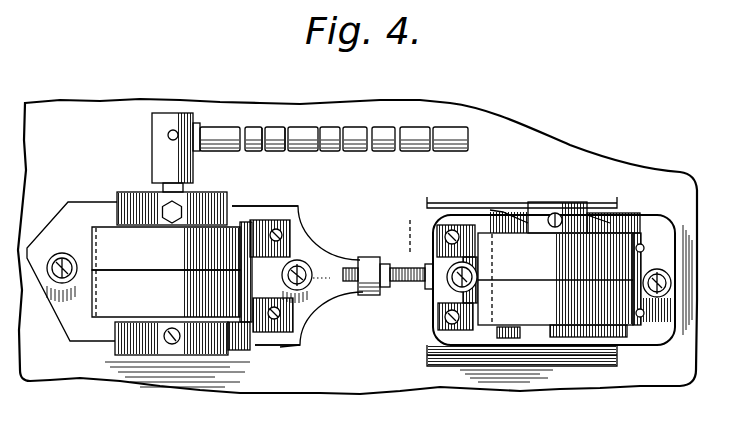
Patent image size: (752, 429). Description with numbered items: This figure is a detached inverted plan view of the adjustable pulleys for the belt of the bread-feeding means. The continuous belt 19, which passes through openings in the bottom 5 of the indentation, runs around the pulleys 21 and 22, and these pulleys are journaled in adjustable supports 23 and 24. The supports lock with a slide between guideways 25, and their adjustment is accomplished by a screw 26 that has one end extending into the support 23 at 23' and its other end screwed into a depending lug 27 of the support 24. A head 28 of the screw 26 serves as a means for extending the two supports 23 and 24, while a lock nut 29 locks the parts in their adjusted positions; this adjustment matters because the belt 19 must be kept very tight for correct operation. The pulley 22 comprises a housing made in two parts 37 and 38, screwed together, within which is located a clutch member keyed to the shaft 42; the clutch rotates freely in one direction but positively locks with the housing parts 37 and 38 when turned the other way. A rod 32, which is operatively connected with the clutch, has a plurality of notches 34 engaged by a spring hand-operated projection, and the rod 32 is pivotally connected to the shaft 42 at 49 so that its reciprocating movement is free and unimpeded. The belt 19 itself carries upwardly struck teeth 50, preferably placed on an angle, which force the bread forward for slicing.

The bottom 5 is at (312, 338).
The continuous belt 19 is at (640, 244).
The pulley 21 is at (555, 285).
The pulley 22 is at (138, 294).
The adjustable support 23 is at (521, 281).
The screw end location in support 23' is at (398, 292).
The adjustable support 24 is at (303, 230).
The guideways 25 is at (289, 203).
The screw 26 is at (390, 228).
The depending lug 27 is at (372, 250).
The head 28 is at (478, 295).
The lock nut 29 is at (316, 296).
The rod 32 is at (263, 133).
The notches 34 is at (307, 158).
The housing part 37 is at (166, 248).
The housing part 38 is at (166, 293).
The shaft 42 is at (190, 192).
The pivotal connection 49 is at (168, 134).
The upwardly struck teeth 50 is at (644, 313).